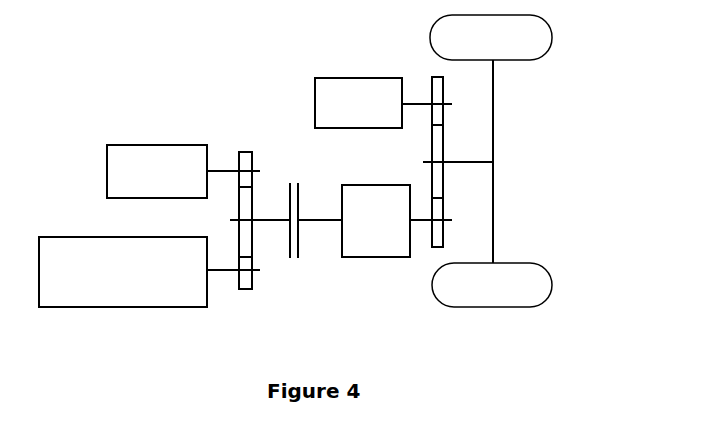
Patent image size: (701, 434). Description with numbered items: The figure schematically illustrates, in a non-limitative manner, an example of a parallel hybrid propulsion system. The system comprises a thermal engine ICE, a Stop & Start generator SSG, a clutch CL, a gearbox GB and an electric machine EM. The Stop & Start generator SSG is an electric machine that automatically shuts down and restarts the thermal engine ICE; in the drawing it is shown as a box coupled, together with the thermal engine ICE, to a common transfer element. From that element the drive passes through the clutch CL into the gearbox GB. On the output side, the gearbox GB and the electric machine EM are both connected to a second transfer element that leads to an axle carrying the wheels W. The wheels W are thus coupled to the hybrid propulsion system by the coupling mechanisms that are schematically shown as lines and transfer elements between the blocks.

The thermal engine ICE is at (149, 272).
The Stop & Start generator SSG is at (183, 171).
The clutch CL is at (316, 244).
The gearbox GB is at (397, 221).
The electric machine EM is at (383, 103).
The wheels W is at (518, 161).